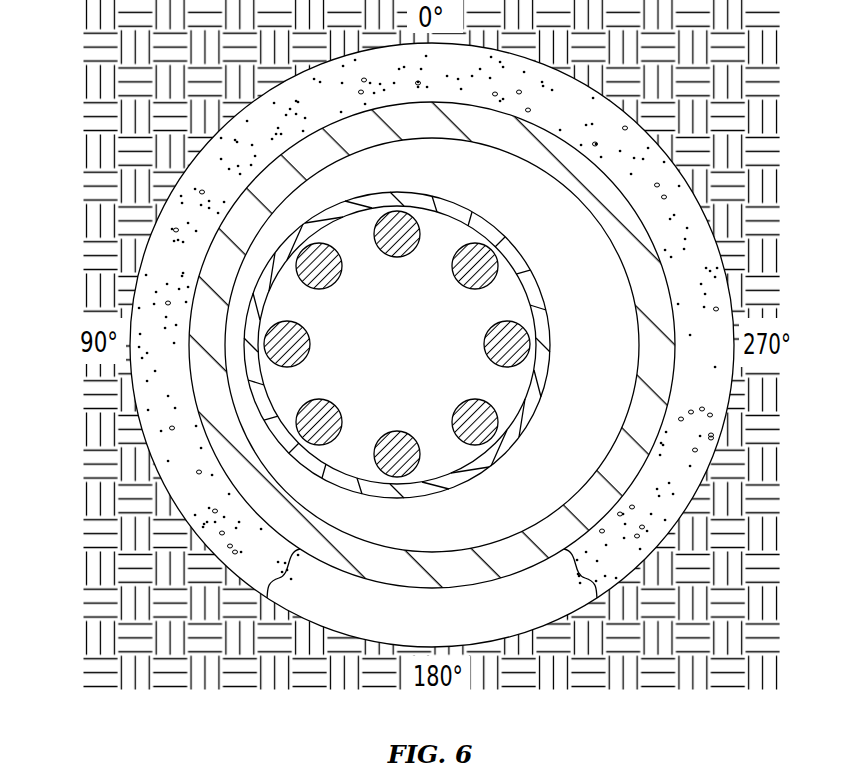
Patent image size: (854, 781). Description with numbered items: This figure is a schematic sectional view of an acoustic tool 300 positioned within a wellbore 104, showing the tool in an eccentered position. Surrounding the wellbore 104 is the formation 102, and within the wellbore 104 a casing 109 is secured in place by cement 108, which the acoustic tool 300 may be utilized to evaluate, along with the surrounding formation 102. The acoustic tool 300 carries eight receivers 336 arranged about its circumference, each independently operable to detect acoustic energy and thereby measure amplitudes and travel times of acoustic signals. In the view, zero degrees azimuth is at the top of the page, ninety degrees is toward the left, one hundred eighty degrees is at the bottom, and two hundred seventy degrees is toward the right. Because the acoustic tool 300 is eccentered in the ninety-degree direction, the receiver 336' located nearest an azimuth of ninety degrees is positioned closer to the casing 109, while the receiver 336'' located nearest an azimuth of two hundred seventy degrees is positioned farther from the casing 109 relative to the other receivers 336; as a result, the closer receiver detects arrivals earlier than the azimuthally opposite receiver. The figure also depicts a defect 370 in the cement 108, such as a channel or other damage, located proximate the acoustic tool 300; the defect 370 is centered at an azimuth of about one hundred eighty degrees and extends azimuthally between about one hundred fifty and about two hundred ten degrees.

The formation 102 is at (92, 80).
The wellbore 104 is at (577, 238).
The cement 108 is at (683, 291).
The casing 109 is at (647, 358).
The acoustic tool 300 is at (395, 193).
The receivers 336 is at (397, 344).
The receiver nearest 90° azimuth 336' is at (322, 339).
The receiver nearest 270° azimuth 336'' is at (471, 339).
The defect 370 is at (457, 633).